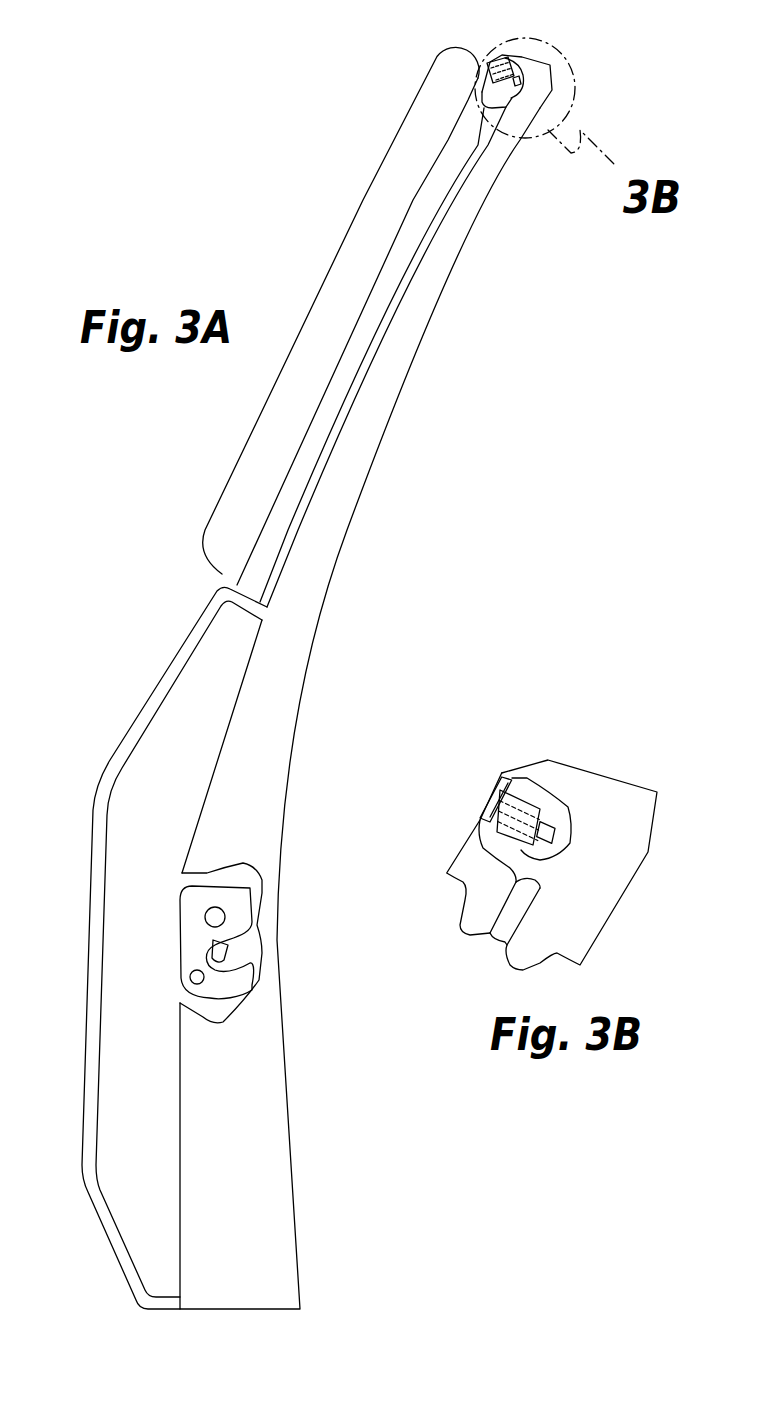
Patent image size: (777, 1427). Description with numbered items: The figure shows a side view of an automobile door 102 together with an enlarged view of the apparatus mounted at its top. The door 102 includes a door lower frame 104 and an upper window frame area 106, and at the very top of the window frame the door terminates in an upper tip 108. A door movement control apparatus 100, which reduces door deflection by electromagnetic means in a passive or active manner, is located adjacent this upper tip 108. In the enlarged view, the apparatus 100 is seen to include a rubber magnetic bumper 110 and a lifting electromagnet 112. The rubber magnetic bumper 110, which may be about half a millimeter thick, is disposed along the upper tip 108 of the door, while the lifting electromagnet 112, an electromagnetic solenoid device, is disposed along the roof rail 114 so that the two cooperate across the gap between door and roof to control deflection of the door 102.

In FIG. 3A, the door movement control apparatus 100 is at (522, 75).
In FIG. 3B, the door movement control apparatus 100 is at (538, 716).
In FIG. 3A, the automobile door 102 is at (295, 1197).
In FIG. 3A, the door lower frame 104 is at (84, 1072).
In FIG. 3A, the upper window frame area 106 is at (336, 267).
In FIG. 3A, the upper tip 108 is at (527, 45).
In FIG. 3B, the upper tip 108 is at (492, 790).
In FIG. 3B, the rubber magnetic bumper 110 is at (483, 807).
In FIG. 3B, the lifting electromagnet 112 is at (550, 802).
In FIG. 3B, the roof rail 114 is at (522, 770).